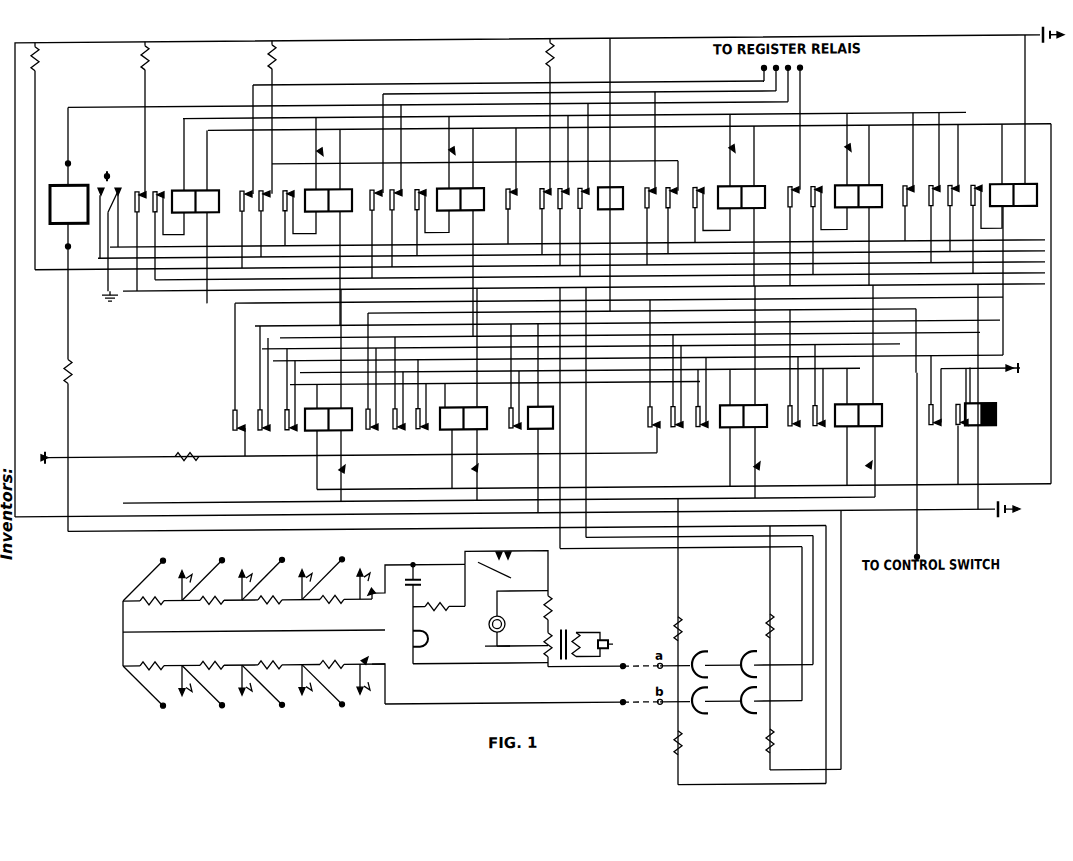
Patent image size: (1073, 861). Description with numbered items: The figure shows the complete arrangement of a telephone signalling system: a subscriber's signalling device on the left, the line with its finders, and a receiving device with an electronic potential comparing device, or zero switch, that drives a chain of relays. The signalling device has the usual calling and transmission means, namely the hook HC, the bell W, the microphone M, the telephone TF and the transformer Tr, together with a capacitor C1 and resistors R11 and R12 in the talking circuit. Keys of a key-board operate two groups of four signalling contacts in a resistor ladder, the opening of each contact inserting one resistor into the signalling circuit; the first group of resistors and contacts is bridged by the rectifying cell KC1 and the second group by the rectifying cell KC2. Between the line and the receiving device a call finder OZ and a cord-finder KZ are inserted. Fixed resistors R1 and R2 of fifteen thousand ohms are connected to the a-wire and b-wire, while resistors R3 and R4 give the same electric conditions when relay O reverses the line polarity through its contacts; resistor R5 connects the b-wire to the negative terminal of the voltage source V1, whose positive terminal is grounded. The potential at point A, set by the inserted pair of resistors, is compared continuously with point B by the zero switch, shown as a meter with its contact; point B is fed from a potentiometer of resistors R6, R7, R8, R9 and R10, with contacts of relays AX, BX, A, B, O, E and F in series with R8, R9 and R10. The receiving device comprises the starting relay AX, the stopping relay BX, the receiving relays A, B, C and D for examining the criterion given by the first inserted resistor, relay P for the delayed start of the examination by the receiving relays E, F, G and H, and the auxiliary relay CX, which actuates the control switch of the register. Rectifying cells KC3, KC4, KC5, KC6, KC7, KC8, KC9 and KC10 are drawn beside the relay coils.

The fixed resistor R1 is at (667, 629).
The fixed resistor R2 is at (667, 743).
The resistor R3 is at (781, 626).
The resistor R4 is at (781, 741).
The resistor R5 is at (559, 116).
The potentiometer resistor R6 is at (78, 376).
The potentiometer resistor R7 is at (45, 156).
The potentiometer resistor R8 is at (154, 120).
The potentiometer resistor R9 is at (120, 467).
The potentiometer resistor R10 is at (283, 119).
The resistor R11 is at (439, 597).
The resistor R12 is at (537, 614).
The capacitor C1 is at (422, 613).
The transformer Tr is at (562, 640).
The telephone TF is at (605, 644).
The microphone M is at (509, 619).
The bell W is at (431, 642).
The hook HC is at (506, 574).
The call finder OZ is at (715, 671).
The cord-finder KZ is at (775, 671).
The rectifying cell KC1 is at (378, 670).
The rectifying cell KC2 is at (415, 592).
The key contact KC3 is at (308, 150).
The key contact KC4 is at (436, 149).
The key contact KC5 is at (715, 147).
The key contact KC6 is at (833, 146).
The key contact KC7 is at (357, 471).
The key contact KC8 is at (490, 470).
The key contact KC9 is at (772, 468).
The key contact KC10 is at (887, 467).
The starting relay AX is at (176, 211).
The first receiving relay A is at (295, 205).
The second receiving relay B is at (292, 402).
The third receiving relay C is at (426, 215).
The fourth receiving relay D is at (426, 406).
The relay O is at (565, 190).
The relay P is at (531, 418).
The fifth receiving relay E is at (704, 189).
The sixth receiving relay F is at (707, 399).
The seventh receiving relay G is at (834, 176).
The eighth receiving relay H is at (834, 403).
The stopping relay BX is at (969, 193).
The auxiliary relay CX is at (969, 420).
The voltage source V1 is at (1029, 286).
The measuring instrument meter is at (69, 181).
The resistor network with tone switches T ladder is at (254, 633).